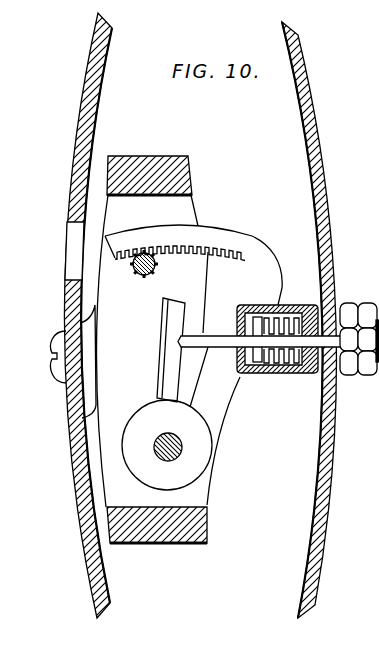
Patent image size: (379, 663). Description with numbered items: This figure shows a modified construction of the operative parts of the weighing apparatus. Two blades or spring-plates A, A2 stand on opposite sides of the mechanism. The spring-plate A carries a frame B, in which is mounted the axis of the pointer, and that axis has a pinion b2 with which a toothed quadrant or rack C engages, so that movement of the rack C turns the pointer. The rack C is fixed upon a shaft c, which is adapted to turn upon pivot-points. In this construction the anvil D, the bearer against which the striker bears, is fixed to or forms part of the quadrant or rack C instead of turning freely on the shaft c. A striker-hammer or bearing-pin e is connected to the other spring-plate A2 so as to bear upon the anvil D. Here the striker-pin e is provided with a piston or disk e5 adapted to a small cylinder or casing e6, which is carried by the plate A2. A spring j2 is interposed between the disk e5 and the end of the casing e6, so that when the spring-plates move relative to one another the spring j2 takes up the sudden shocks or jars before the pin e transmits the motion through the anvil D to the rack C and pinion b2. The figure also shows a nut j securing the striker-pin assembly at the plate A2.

The blade or spring-plate A is at (78, 112).
The blade or spring-plate A2 is at (331, 233).
The frame B is at (165, 156).
The toothed quadrant or rack C is at (262, 253).
The anvil D is at (160, 346).
The pinion b2 is at (158, 265).
The shaft c is at (182, 447).
The striker-hammer or bearing-pin e is at (195, 334).
The piston or disk e5 is at (258, 306).
The small cylinder or casing e6 is at (277, 376).
The nut j is at (338, 307).
The spring j2 is at (250, 382).